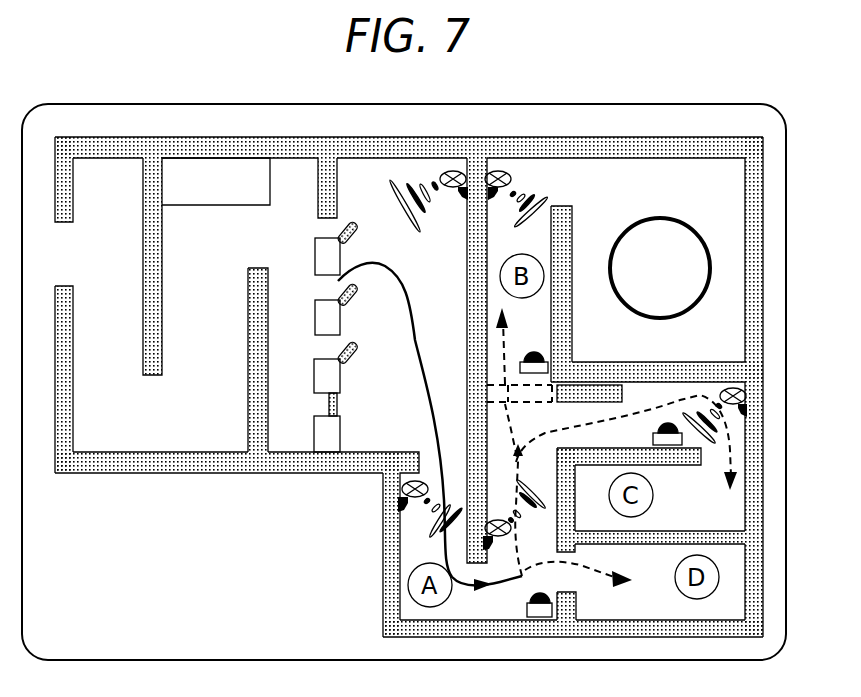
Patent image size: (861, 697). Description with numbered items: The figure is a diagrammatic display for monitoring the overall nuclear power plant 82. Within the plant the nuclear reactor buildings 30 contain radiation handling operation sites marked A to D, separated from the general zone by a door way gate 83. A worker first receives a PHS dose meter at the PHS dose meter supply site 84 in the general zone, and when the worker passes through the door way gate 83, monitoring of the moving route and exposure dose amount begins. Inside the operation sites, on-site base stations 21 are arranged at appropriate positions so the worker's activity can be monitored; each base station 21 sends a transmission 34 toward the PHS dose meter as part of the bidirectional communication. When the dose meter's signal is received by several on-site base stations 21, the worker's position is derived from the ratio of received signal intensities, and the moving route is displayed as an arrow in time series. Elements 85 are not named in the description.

The on-site base station 21 is at (449, 169).
The nuclear reactor building 30 is at (718, 229).
The transmission from on-site base station to PHS dose meter 34 is at (394, 184).
The nuclear power plant 82 is at (66, 136).
The door way gate 83 is at (313, 252).
The PHS dose meter supply site 84 is at (192, 178).
The sensor 85 is at (553, 358).